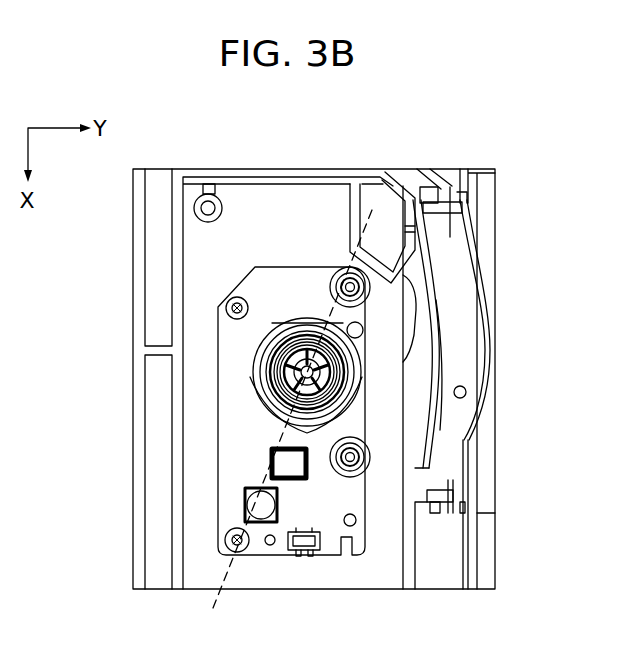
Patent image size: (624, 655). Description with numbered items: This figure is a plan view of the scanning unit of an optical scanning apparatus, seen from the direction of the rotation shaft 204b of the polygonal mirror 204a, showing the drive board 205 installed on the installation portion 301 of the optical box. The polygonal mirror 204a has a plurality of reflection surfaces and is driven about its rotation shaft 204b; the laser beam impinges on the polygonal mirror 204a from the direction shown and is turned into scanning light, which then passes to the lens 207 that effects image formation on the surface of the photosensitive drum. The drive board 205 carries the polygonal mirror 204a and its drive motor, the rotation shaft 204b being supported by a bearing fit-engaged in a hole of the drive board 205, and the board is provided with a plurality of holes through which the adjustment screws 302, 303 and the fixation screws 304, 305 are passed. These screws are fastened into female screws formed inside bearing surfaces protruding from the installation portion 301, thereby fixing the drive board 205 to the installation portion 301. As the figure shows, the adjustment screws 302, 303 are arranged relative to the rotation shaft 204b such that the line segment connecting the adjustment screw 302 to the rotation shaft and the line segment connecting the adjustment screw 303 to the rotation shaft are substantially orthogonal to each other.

The installation portion 301 is at (195, 452).
The adjustment screw 302 is at (362, 464).
The adjustment screw 303 is at (340, 278).
The fixation screw 304 is at (225, 548).
The fixation screw 305 is at (225, 308).
The polygonal mirror 204a is at (255, 397).
The rotation shaft 204b is at (315, 378).
The drive board 205 is at (232, 497).
The lens 207 is at (460, 347).